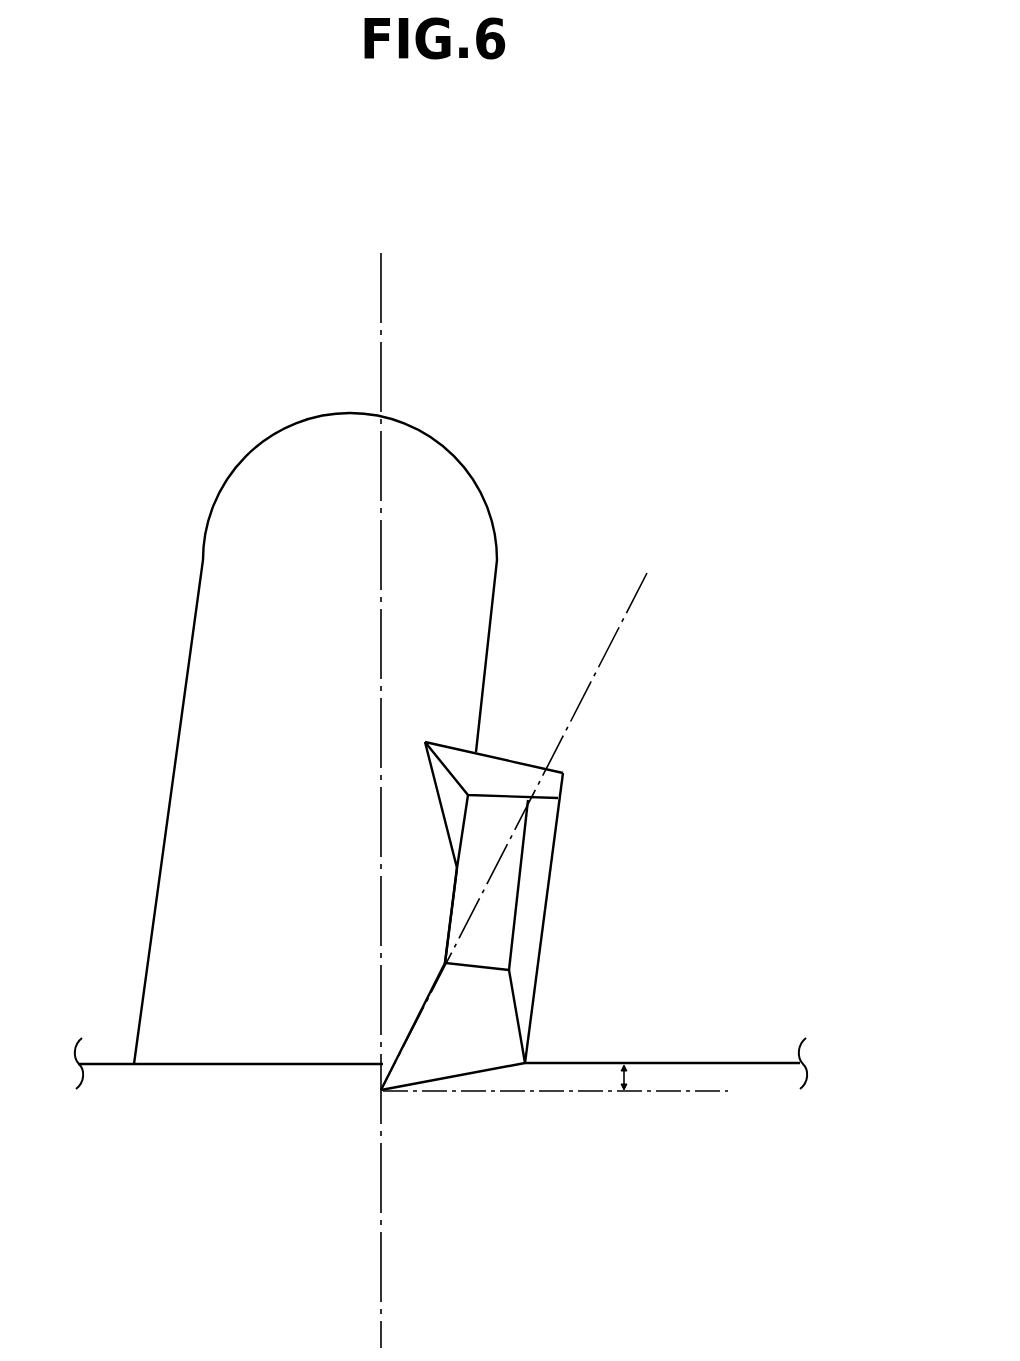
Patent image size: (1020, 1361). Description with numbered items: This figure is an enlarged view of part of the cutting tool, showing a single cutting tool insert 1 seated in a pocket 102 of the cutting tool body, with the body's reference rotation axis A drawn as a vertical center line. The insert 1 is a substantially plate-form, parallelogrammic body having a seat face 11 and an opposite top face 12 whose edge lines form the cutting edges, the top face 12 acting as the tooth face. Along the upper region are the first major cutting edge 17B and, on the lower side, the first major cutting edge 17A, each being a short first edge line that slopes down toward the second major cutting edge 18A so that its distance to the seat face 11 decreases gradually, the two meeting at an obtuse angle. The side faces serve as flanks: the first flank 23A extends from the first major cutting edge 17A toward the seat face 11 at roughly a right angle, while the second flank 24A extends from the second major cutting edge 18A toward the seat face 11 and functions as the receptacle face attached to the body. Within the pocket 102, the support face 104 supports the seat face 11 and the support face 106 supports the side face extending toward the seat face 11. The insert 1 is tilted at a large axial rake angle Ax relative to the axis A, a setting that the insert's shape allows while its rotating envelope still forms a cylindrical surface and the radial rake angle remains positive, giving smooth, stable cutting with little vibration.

The cutting tool insert 1 is at (475, 933).
The seat face 11 is at (553, 872).
The top face 12 is at (450, 920).
The first major cutting edge 17A is at (412, 1030).
The first major cutting edge 17B is at (432, 790).
The second major cutting edge 18A is at (452, 890).
The first flank 23A is at (442, 1050).
The second flank 24A is at (513, 860).
The pocket 102 is at (537, 995).
The support face 104 is at (548, 915).
The support face 106 is at (515, 760).
The reference rotation axis A is at (377, 783).
The axial rake angle Ax is at (425, 1003).